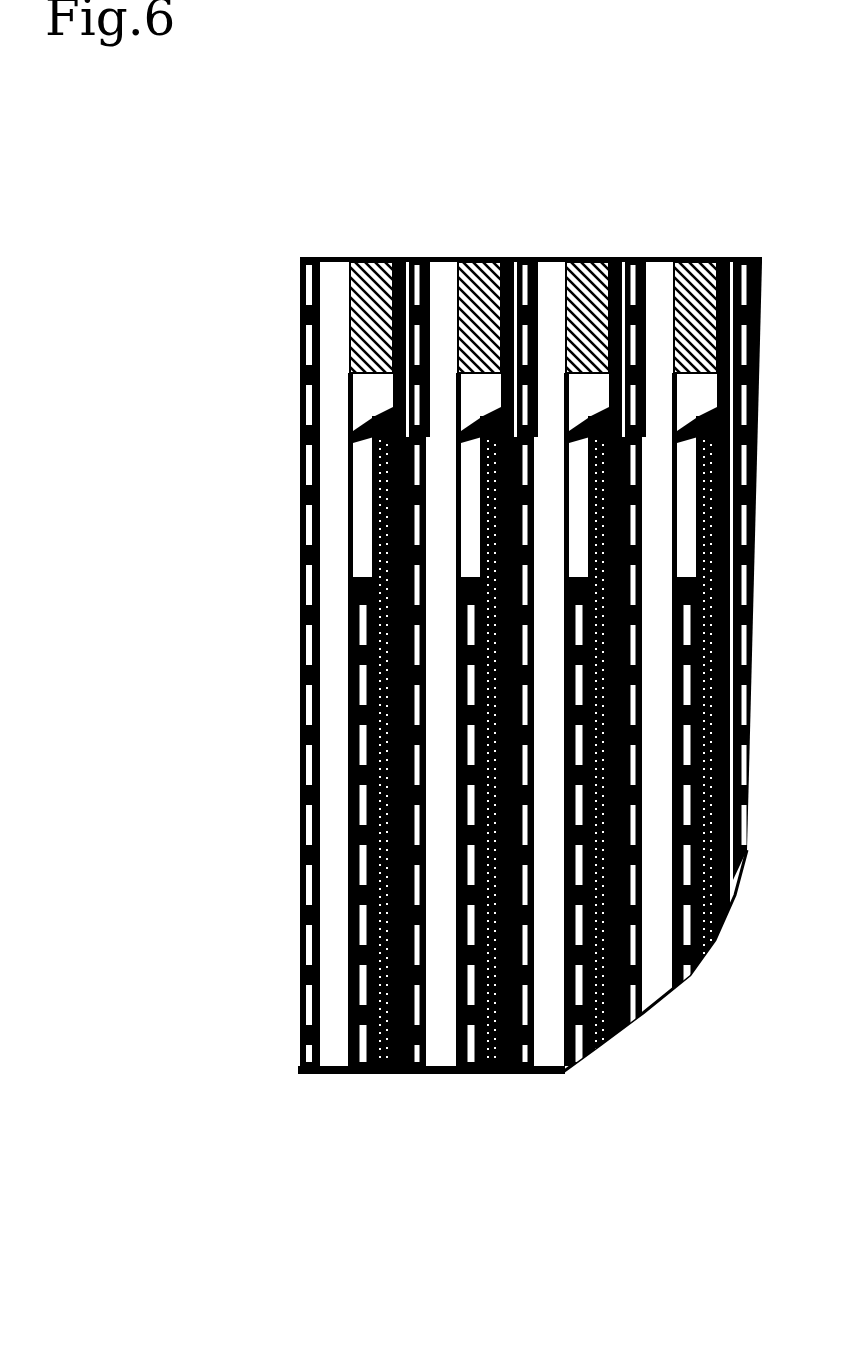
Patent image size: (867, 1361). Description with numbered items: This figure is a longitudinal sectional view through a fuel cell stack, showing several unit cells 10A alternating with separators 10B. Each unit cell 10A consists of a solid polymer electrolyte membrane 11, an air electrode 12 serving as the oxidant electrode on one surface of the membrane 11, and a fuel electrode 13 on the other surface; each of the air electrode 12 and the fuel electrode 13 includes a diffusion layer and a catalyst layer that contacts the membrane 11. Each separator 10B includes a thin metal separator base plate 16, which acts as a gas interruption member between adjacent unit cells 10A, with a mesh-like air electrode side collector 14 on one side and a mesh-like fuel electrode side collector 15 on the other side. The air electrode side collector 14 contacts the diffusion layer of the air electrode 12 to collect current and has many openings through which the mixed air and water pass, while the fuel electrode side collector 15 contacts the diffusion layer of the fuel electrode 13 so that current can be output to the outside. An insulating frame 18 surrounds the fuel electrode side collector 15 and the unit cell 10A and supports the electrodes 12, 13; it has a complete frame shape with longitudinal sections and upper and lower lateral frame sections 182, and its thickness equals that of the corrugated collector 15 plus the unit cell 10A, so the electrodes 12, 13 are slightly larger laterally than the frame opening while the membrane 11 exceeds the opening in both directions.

The unit cell 10A is at (652, 780).
The separator 10B is at (396, 788).
The solid polymer electrolyte membrane 11 is at (610, 1040).
The air electrode 12 is at (630, 1012).
The fuel electrode 13 is at (615, 1040).
The air electrode side collector 14 is at (322, 1078).
The fuel electrode side collector 15 is at (373, 1078).
The separator base plate 16 is at (357, 1078).
The frame 18 is at (484, 242).
The lateral frame section 182 is at (598, 260).